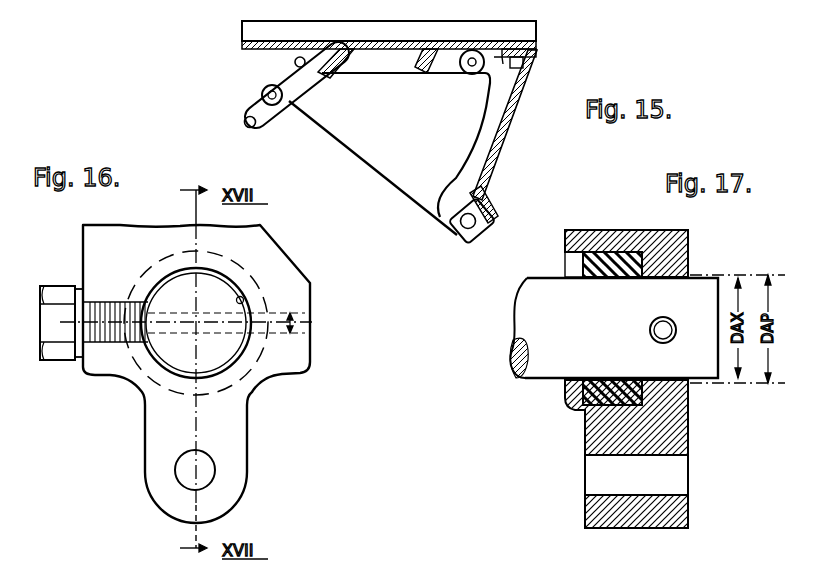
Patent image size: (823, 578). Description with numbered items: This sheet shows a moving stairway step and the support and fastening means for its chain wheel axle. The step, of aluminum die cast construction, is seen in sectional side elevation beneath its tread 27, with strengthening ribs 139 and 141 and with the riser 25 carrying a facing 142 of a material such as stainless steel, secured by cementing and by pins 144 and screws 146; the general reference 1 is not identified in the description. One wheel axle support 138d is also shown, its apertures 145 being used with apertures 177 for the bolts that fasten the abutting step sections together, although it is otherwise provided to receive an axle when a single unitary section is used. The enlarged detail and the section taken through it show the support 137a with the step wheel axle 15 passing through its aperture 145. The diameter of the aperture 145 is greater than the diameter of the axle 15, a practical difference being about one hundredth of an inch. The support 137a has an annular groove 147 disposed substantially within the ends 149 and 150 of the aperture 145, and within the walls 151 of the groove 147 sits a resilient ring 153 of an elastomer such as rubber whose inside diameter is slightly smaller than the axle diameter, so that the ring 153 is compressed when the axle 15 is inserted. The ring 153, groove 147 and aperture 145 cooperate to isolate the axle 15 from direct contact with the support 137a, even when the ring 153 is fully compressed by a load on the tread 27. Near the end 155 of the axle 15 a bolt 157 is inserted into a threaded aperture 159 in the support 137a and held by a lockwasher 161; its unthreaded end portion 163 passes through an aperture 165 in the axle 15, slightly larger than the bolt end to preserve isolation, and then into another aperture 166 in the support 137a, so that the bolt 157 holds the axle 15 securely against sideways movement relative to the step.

In FIG. 15, the vehicle body 1 is at (387, 17).
In FIG. 15, the tread 27 is at (524, 19).
In FIG. 15, the riser 25 is at (582, 83).
In FIG. 15, the strengthening ribs 139 is at (417, 66).
In FIG. 15, the strengthening ribs 141 is at (470, 146).
In FIG. 15, the facing 142 is at (508, 137).
In FIG. 15, the pins 144 is at (523, 67).
In FIG. 15, the aperture 145 is at (262, 95).
In FIG. 16, the aperture 145 is at (245, 300).
In FIG. 17, the aperture 145 is at (566, 382).
In FIG. 15, the screws 146 is at (492, 199).
In FIG. 15, the wheel axle support 138d is at (452, 230).
In FIG. 15, the wheel axle support 137a is at (303, 142).
In FIG. 16, the wheel axle support 137a is at (117, 372).
In FIG. 17, the wheel axle support 137a is at (735, 428).
In FIG. 15, the apertures 177 is at (292, 50).
In FIG. 16, the apertures 177 is at (208, 468).
In FIG. 17, the apertures 177 is at (678, 482).
In FIG. 16, the step wheel axle 15 is at (196, 384).
In FIG. 17, the step wheel axle 15 is at (530, 283).
In FIG. 16, the annular groove 147 is at (238, 272).
In FIG. 17, the annular groove 147 is at (583, 260).
In FIG. 17, the end of the aperture 149 is at (690, 250).
In FIG. 17, the end of the aperture 150 is at (571, 241).
In FIG. 17, the walls of the annular groove 151 is at (567, 406).
In FIG. 16, the resilient ring 153 is at (250, 378).
In FIG. 17, the resilient ring 153 is at (611, 276).
In FIG. 16, the end of the axle 155 is at (175, 280).
In FIG. 17, the end of the axle 155 is at (720, 380).
In FIG. 16, the bolt 157 is at (56, 362).
In FIG. 16, the threaded aperture 159 is at (98, 306).
In FIG. 16, the lockwasher 161 is at (80, 288).
In FIG. 16, the unthreaded end portion 163 is at (190, 320).
In FIG. 17, the unthreaded end portion 163 is at (670, 340).
In FIG. 16, the aperture 165 is at (221, 343).
In FIG. 17, the aperture 165 is at (663, 318).
In FIG. 16, the aperture 166 is at (290, 338).